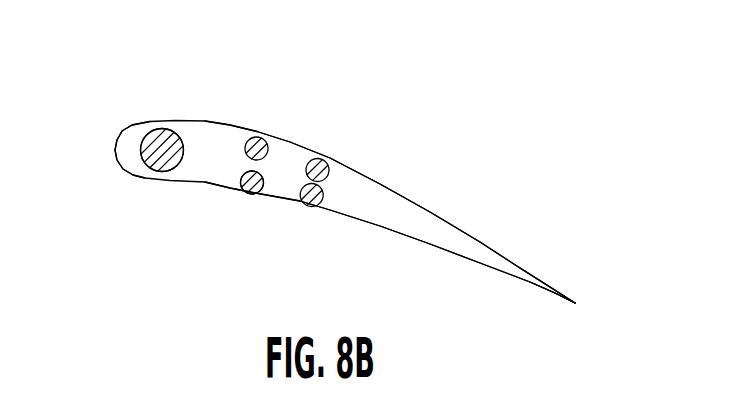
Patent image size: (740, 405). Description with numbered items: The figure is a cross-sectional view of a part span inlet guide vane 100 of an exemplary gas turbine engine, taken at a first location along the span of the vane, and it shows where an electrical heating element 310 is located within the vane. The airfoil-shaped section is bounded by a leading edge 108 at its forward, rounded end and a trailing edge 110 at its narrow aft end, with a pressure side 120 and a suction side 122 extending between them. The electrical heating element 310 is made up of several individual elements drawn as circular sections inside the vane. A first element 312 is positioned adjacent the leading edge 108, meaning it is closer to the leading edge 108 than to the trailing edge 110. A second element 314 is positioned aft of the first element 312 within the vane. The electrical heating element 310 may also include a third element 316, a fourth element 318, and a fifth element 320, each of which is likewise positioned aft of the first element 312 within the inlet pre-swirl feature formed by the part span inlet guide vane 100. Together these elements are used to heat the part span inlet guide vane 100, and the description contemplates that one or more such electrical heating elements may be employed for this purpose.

The part span inlet guide vane 100 is at (370, 103).
The leading edge 108 is at (100, 118).
The trailing edge 110 is at (579, 295).
The pressure side 120 is at (243, 233).
The suction side 122 is at (298, 112).
The electrical heating element 310 is at (202, 162).
The first element 312 is at (153, 138).
The second element 314 is at (250, 183).
The third element 316 is at (261, 137).
The fourth element 318 is at (311, 206).
The fifth element 320 is at (327, 161).